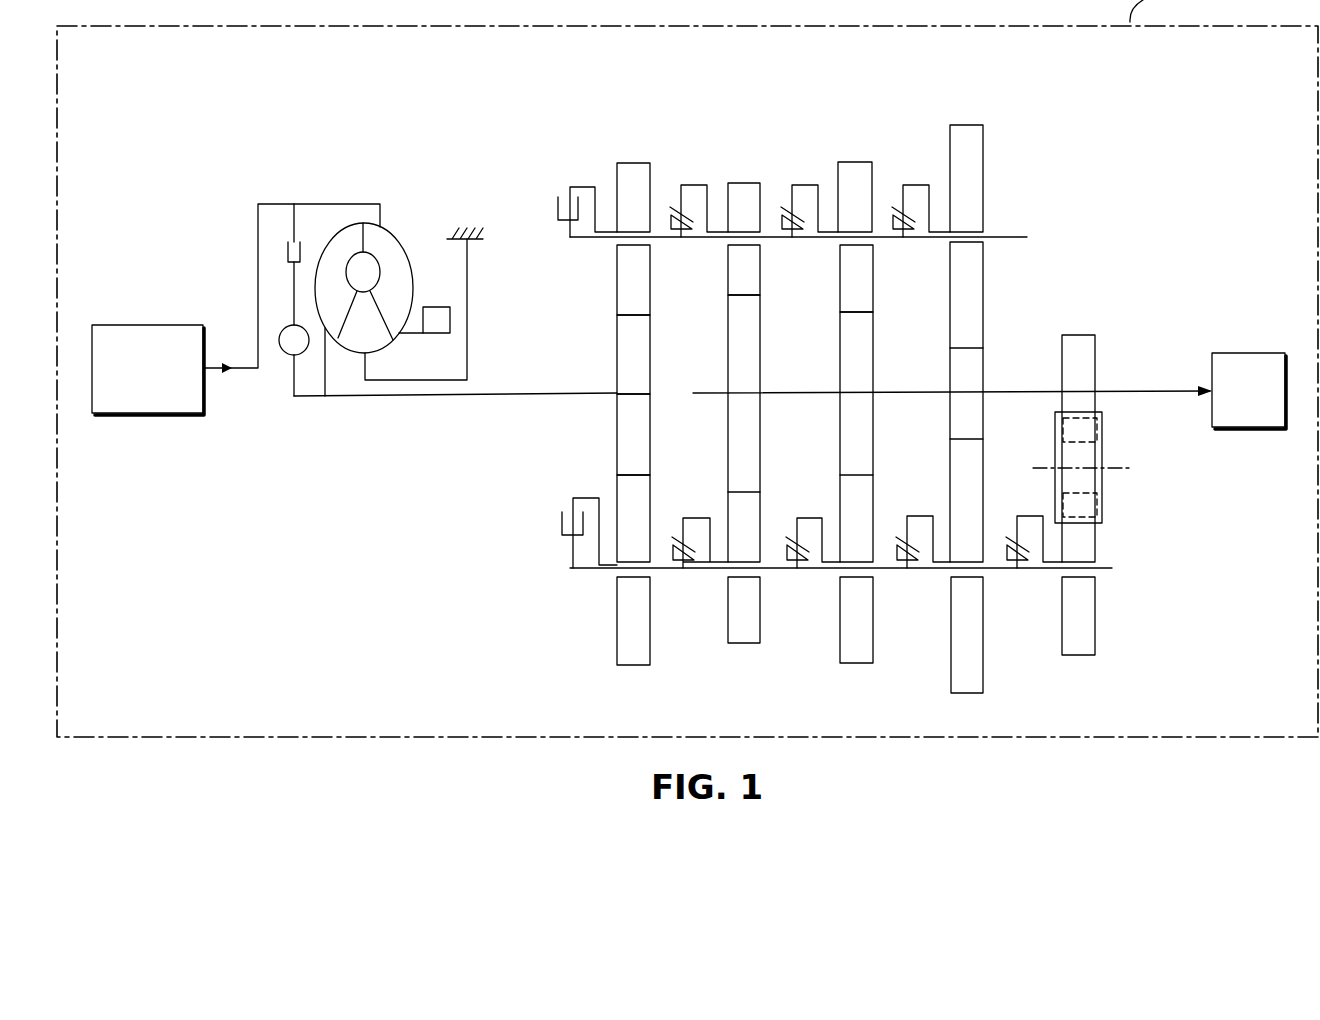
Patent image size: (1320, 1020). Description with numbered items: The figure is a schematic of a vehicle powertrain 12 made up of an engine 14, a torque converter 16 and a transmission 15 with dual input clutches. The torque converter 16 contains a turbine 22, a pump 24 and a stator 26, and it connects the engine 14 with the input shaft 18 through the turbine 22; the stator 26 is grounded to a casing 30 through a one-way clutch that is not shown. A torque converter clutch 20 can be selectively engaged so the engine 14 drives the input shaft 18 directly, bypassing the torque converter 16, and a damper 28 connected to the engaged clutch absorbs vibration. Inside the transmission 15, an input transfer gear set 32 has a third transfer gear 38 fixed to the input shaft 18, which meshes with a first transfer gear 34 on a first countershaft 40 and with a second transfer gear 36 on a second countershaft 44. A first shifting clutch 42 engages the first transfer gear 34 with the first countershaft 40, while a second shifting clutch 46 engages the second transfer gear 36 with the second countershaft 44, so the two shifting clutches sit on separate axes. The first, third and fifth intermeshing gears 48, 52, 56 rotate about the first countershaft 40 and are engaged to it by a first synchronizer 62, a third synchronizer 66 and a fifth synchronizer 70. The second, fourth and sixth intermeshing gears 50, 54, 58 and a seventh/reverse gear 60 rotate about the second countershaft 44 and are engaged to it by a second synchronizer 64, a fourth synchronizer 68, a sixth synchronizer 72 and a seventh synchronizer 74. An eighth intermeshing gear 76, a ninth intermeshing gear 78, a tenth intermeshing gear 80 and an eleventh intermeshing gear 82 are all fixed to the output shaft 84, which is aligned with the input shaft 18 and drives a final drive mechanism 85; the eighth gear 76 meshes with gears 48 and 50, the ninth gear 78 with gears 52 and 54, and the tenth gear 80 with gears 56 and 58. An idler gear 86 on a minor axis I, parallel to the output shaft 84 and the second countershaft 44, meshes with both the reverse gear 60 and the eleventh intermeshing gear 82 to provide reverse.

The powertrain 12 is at (215, 497).
The engine 14 is at (142, 415).
The transmission 15 is at (964, 92).
The torque converter 16 is at (398, 216).
The input shaft 18 is at (450, 397).
The torque converter clutch 20 is at (284, 238).
The turbine 22 is at (336, 234).
The pump 24 is at (404, 250).
The stator 26 is at (355, 352).
The damper 28 is at (288, 355).
The casing 30 is at (484, 242).
The input transfer gear set 32 is at (617, 298).
The first transfer gear 34 is at (617, 270).
The second transfer gear 36 is at (651, 621).
The third transfer gear 38 is at (651, 358).
The first countershaft 40 is at (1010, 238).
The first shifting clutch 42 is at (550, 184).
The second countershaft 44 is at (1112, 568).
The second shifting clutch 46 is at (557, 545).
The first intermeshing gear 48 is at (761, 274).
The second intermeshing gear 50 is at (761, 621).
The third intermeshing gear 52 is at (874, 274).
The fourth intermeshing gear 54 is at (874, 621).
The fifth intermeshing gear 56 is at (984, 180).
The sixth intermeshing gear 58 is at (984, 621).
The seventh/reverse gear 60 is at (1096, 619).
The first synchronizer 62 is at (670, 193).
The second synchronizer 64 is at (671, 534).
The third synchronizer 66 is at (778, 194).
The fourth synchronizer 68 is at (782, 534).
The fifth synchronizer 70 is at (890, 192).
The sixth synchronizer 72 is at (894, 530).
The seventh synchronizer 74 is at (1006, 530).
The eighth intermeshing gear 76 is at (761, 359).
The ninth intermeshing gear 78 is at (874, 358).
The tenth intermeshing gear 80 is at (984, 366).
The eleventh intermeshing gear 82 is at (1096, 351).
The output shaft 84 is at (1155, 393).
The final drive mechanism 85 is at (1249, 391).
The idler gear 86 is at (1103, 428).
The axis I is at (1133, 468).